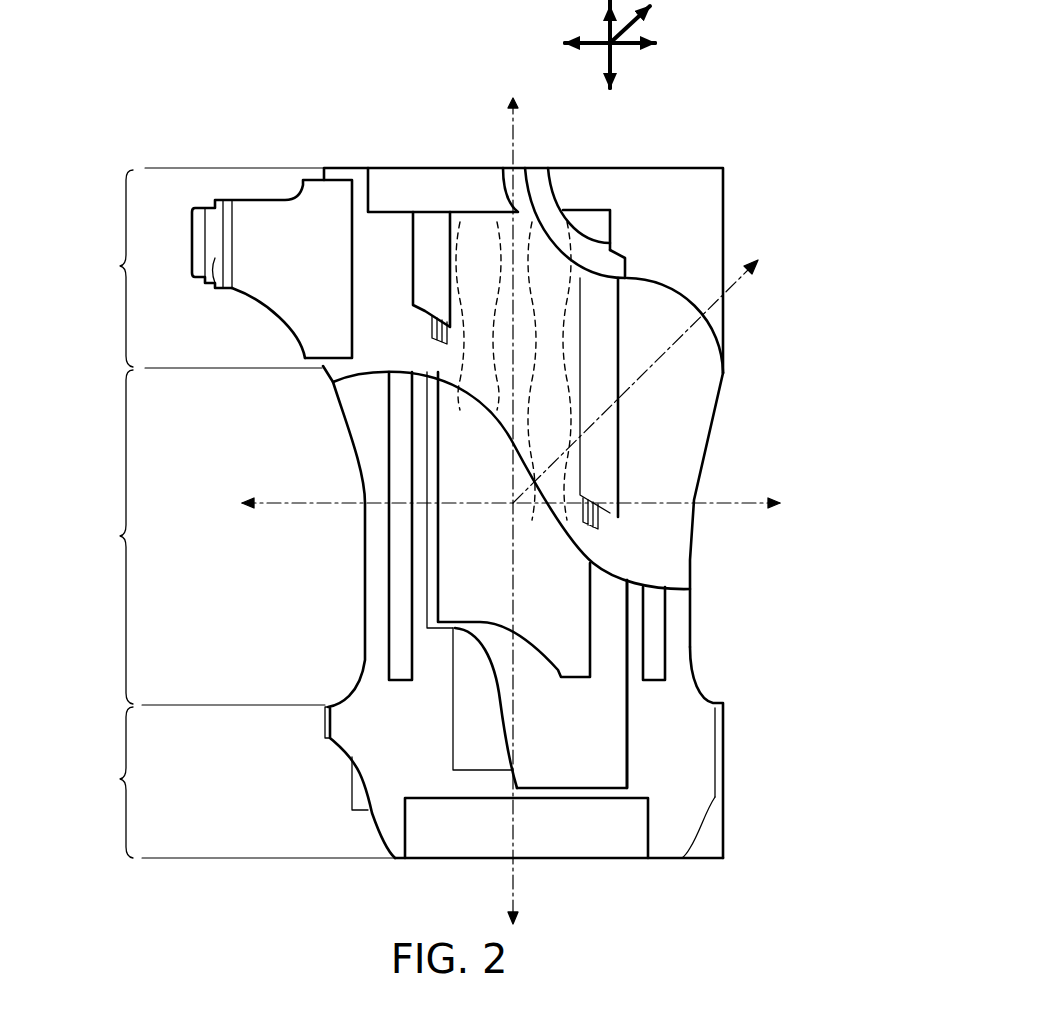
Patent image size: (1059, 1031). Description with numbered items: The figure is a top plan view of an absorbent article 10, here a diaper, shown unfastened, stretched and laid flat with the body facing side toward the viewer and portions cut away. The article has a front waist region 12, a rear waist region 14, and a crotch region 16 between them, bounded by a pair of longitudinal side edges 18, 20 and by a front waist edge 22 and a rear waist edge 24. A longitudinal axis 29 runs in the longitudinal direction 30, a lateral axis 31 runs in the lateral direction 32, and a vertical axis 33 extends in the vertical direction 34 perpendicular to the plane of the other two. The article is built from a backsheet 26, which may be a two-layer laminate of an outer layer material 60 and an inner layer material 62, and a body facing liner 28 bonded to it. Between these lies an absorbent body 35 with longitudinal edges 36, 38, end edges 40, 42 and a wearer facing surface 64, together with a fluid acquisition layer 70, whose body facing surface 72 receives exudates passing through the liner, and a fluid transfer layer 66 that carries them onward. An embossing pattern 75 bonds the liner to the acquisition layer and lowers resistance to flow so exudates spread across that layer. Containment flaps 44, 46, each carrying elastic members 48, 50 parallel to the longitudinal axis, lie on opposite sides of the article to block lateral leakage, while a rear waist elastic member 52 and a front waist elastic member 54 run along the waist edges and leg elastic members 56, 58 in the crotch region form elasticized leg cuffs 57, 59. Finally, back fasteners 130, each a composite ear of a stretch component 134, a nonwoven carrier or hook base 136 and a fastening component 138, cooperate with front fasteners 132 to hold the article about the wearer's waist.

The absorbent article 10 is at (715, 105).
The front waist region 12 is at (239, 781).
The rear waist region 14 is at (203, 268).
The crotch region 16 is at (108, 537).
The longitudinal side edge 18 is at (357, 663).
The longitudinal side edge 20 is at (705, 682).
The front waist edge 22 is at (495, 858).
The rear waist edge 24 is at (393, 166).
The backsheet 26 is at (723, 203).
The body facing liner 28 is at (664, 416).
The longitudinal axis 29 is at (520, 160).
The longitudinal direction 30 is at (605, 28).
The lateral axis 31 is at (270, 500).
The lateral direction 32 is at (618, 48).
The vertical axis 33 is at (735, 290).
The vertical direction 34 is at (632, 25).
The absorbent body 35 is at (472, 757).
The longitudinal edge of absorbent body 36 is at (450, 742).
The longitudinal edge of absorbent body 38 is at (617, 237).
The end edge of absorbent body 40 is at (472, 772).
The end edge of absorbent body 42 is at (585, 210).
The containment flap 44 is at (413, 250).
The containment flap 46 is at (605, 338).
The elastic member 48 is at (432, 322).
The elastic member 50 is at (597, 517).
The rear waist elastic member 52 is at (445, 195).
The front waist elastic member 54 is at (625, 855).
The leg elastic member 56 is at (402, 665).
The elasticized leg cuff 57 is at (318, 574).
The leg elastic member 58 is at (668, 653).
The elasticized leg cuff 59 is at (693, 575).
The outer layer material 60 is at (720, 848).
The inner layer material 62 is at (710, 750).
The wearer facing surface 64 is at (465, 741).
The fluid transfer layer 66 is at (551, 749).
The fluid acquisition layer 70 is at (568, 635).
The body facing surface 72 is at (628, 688).
The embossing pattern 75 is at (483, 108).
The back fastener 130 is at (228, 188).
The front fastener 132 is at (352, 792).
The stretch component 134 is at (272, 296).
The nonwoven carrier or hook base 136 is at (197, 235).
The fastening component 138 is at (215, 268).